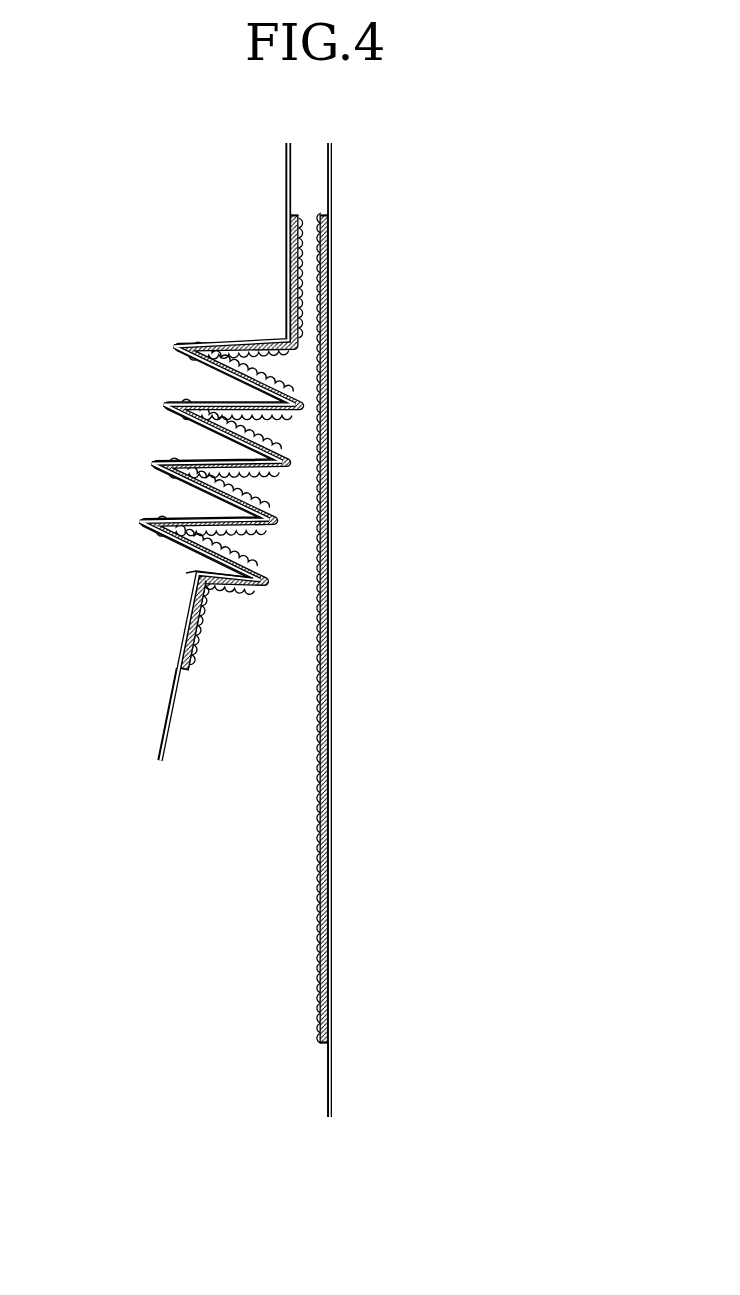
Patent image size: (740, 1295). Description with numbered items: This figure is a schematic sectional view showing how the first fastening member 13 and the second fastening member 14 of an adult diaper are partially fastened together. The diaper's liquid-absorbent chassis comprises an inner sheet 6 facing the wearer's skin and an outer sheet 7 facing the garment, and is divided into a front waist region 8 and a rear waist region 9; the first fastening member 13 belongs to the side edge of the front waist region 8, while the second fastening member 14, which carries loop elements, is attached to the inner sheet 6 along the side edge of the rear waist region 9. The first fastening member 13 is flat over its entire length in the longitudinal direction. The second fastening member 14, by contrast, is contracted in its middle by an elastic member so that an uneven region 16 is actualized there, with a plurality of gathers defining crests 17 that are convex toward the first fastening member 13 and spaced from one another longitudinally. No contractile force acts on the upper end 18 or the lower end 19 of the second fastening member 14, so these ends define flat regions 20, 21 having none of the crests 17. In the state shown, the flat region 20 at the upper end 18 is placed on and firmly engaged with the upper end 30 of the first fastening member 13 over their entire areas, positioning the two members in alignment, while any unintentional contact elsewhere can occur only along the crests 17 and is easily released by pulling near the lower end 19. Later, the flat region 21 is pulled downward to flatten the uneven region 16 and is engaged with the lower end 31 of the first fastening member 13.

The inner sheet 6 is at (289, 153).
The outer sheet 7 is at (328, 158).
The front waist region 8 is at (310, 1118).
The rear waist region 9 is at (158, 762).
The first fastening member 13 is at (332, 570).
The second fastening member 14 is at (165, 402).
The uneven region 16 is at (168, 478).
The crests 17 is at (248, 460).
The upper end 18 is at (291, 216).
The lower end 19 is at (183, 665).
The flat region 20 is at (292, 278).
The flat region 21 is at (191, 598).
The upper end 30 is at (327, 220).
The lower end 31 is at (328, 1040).